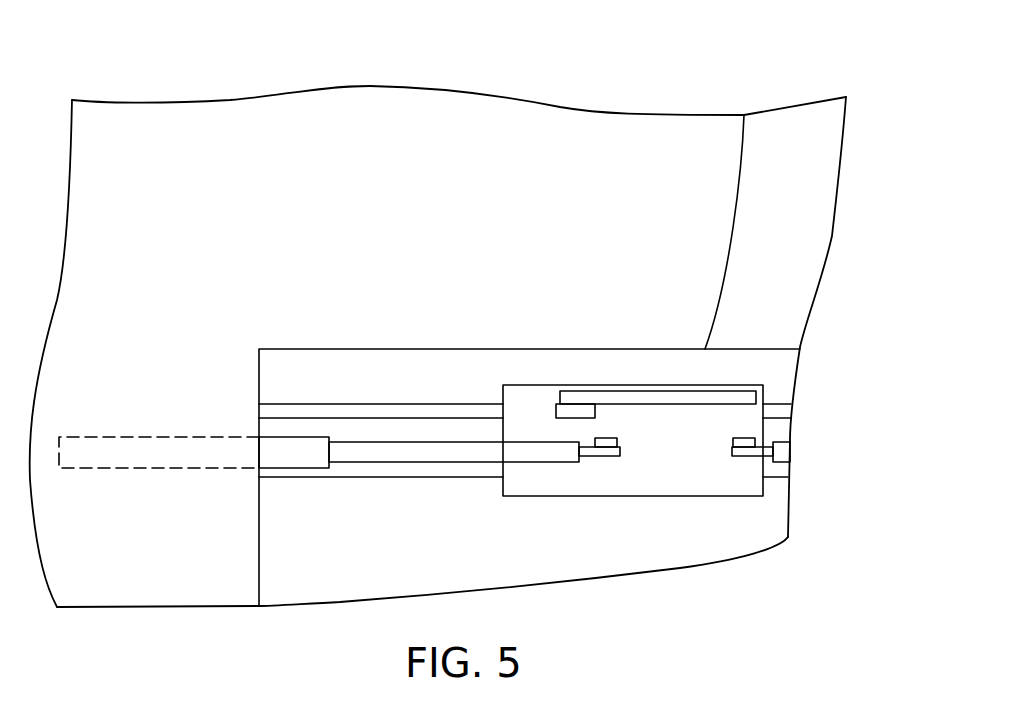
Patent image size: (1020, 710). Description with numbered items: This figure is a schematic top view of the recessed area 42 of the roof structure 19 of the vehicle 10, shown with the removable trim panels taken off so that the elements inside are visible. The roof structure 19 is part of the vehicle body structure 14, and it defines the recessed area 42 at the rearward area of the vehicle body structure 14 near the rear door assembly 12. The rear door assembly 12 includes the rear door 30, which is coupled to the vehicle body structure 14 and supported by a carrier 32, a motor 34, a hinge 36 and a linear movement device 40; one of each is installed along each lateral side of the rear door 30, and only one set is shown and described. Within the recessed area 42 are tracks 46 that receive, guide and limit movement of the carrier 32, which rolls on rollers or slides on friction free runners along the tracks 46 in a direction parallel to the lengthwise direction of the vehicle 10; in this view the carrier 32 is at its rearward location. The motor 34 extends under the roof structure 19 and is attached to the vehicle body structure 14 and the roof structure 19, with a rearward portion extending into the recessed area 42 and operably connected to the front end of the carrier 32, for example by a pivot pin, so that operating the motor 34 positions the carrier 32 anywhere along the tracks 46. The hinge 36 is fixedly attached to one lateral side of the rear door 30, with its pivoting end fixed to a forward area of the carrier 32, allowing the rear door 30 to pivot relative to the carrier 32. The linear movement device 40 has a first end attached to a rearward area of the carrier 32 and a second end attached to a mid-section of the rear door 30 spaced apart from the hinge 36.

The vehicle 10 is at (175, 52).
The rear door assembly 12 is at (850, 138).
The vehicle body structure 14 is at (323, 85).
The roof structure 19 is at (603, 180).
The rear door 30 is at (790, 238).
The carrier 32 is at (660, 465).
The motor 34 is at (138, 435).
The hinge 36 is at (623, 390).
The linear movement device 40 is at (783, 463).
The recessed area 42 is at (450, 540).
The tracks 46 is at (402, 410).